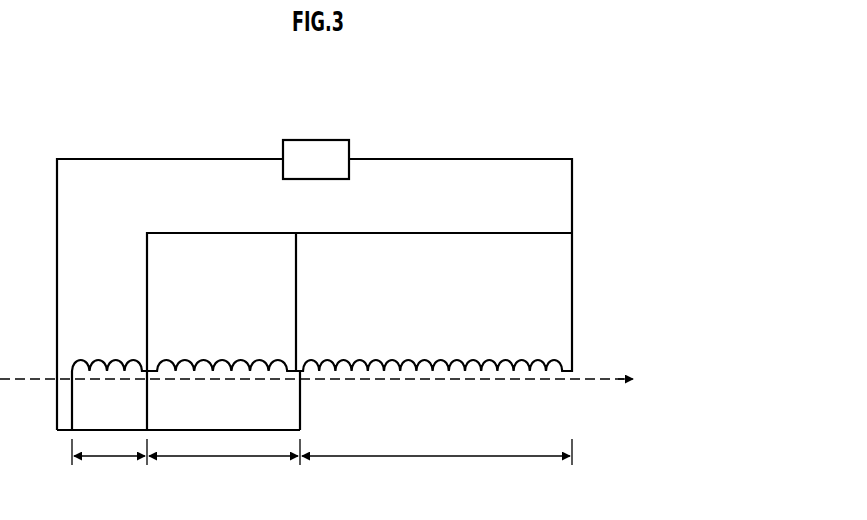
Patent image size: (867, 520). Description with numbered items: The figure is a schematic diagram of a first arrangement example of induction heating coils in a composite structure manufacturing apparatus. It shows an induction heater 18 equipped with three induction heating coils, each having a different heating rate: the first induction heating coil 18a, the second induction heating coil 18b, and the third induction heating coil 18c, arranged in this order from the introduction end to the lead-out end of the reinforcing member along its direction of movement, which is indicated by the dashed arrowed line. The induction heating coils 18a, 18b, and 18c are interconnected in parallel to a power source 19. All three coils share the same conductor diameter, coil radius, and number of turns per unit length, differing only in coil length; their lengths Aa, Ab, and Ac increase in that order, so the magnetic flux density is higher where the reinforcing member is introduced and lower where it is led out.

The induction heater 18 is at (66, 140).
The power source 19 is at (332, 140).
The first induction heating coil 18a is at (105, 357).
The second induction heating coil 18b is at (230, 357).
The third induction heating coil 18c is at (450, 357).